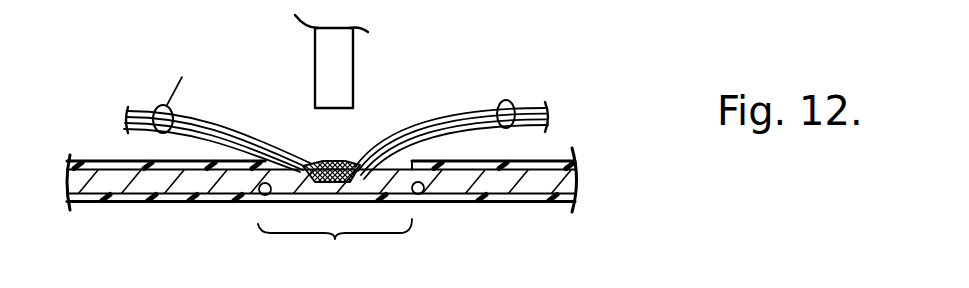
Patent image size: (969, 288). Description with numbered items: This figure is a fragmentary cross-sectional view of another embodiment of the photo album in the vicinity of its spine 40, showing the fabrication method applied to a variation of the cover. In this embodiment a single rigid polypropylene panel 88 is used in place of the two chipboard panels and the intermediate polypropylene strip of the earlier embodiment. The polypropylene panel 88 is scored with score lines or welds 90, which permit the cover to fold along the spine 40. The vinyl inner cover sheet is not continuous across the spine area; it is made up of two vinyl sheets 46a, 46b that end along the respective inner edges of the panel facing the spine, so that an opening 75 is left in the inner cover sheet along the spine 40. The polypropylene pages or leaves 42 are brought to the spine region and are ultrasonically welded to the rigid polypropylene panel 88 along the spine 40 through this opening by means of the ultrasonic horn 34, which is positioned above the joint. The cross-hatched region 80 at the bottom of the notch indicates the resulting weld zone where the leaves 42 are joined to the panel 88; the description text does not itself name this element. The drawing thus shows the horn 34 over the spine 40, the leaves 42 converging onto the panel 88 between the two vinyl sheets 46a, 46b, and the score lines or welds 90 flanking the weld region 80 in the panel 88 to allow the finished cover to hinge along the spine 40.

The ultrasonic horn 34 is at (353, 73).
The polypropylene pages or leaves 42 is at (507, 100).
The vinyl sheet 46a is at (550, 157).
The vinyl sheet 46b is at (107, 163).
The opening 75 is at (263, 166).
The weld joint 80 is at (333, 161).
The rigid polypropylene panel 88 is at (527, 180).
The score lines or welds 90 is at (253, 170).
The spine 40 is at (335, 244).